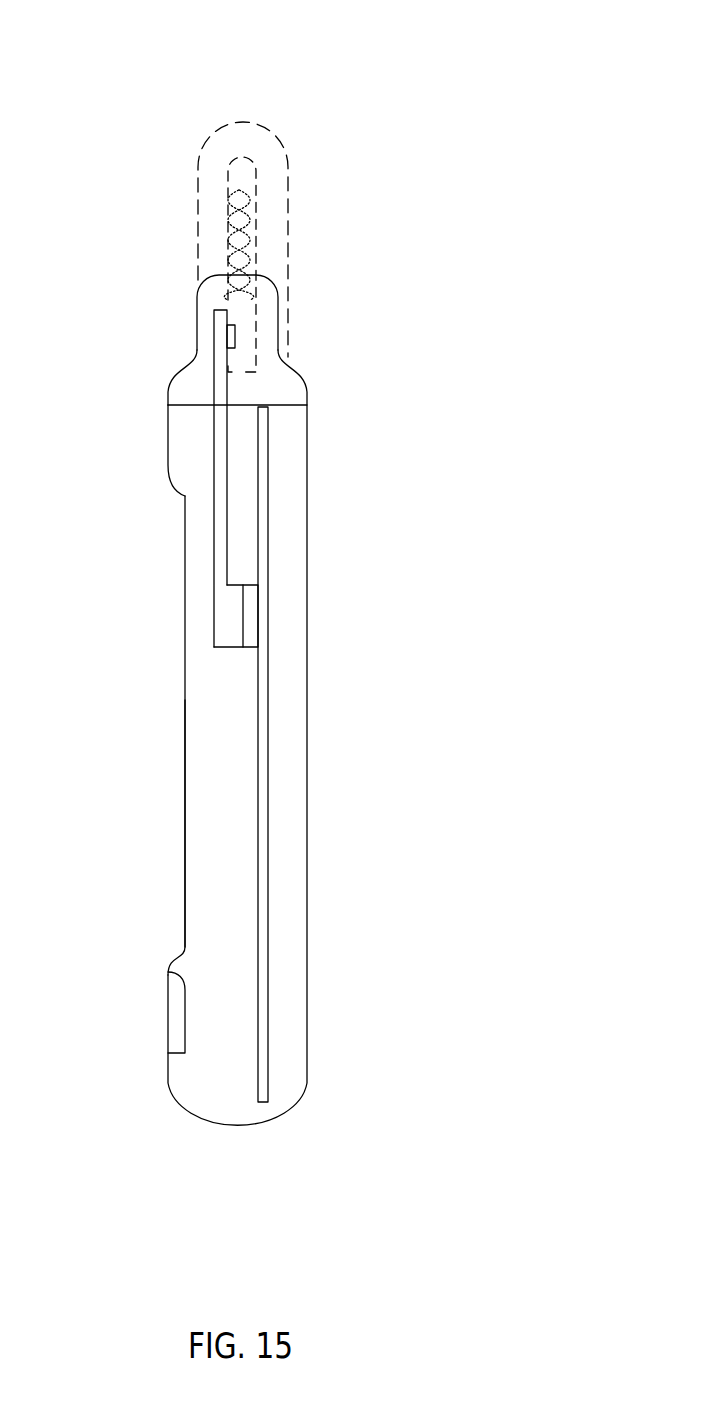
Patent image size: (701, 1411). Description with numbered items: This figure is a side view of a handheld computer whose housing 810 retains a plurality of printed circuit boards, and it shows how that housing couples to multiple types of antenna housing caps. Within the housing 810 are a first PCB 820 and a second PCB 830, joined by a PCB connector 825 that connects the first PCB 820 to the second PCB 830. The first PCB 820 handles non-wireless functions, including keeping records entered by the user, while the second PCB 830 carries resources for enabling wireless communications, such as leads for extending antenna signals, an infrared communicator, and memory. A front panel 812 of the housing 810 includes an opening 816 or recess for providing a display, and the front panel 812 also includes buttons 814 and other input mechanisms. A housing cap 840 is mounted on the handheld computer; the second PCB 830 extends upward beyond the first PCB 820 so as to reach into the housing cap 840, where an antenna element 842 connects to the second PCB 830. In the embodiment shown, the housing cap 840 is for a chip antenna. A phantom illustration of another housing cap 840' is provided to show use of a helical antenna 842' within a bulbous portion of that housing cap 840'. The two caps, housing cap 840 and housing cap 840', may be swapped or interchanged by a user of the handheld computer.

The housing 810 is at (328, 407).
The front panel 812 is at (185, 660).
The buttons 814 is at (177, 1022).
The opening 816 is at (192, 833).
The first PCB 820 is at (268, 715).
The PCB connector 825 is at (235, 648).
The second PCB 830 is at (213, 490).
The housing cap 840 is at (287, 277).
The housing cap 840' is at (291, 186).
The antenna element 842 is at (302, 322).
The helical antenna 842' is at (309, 246).